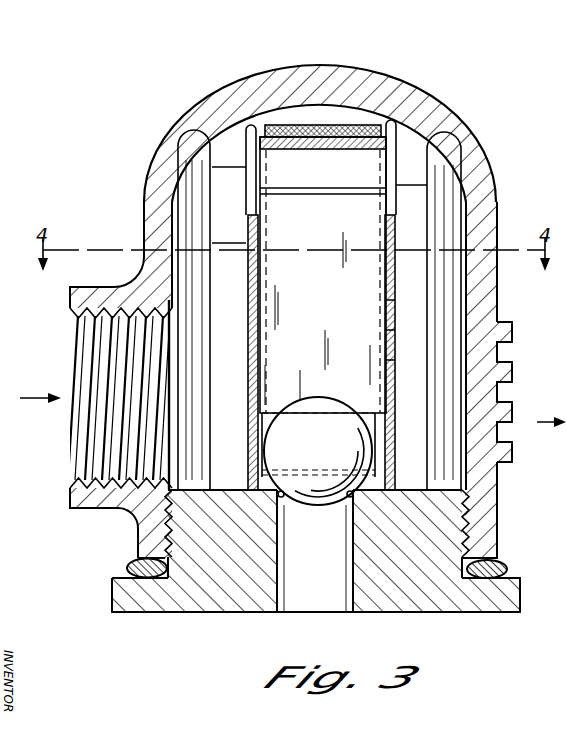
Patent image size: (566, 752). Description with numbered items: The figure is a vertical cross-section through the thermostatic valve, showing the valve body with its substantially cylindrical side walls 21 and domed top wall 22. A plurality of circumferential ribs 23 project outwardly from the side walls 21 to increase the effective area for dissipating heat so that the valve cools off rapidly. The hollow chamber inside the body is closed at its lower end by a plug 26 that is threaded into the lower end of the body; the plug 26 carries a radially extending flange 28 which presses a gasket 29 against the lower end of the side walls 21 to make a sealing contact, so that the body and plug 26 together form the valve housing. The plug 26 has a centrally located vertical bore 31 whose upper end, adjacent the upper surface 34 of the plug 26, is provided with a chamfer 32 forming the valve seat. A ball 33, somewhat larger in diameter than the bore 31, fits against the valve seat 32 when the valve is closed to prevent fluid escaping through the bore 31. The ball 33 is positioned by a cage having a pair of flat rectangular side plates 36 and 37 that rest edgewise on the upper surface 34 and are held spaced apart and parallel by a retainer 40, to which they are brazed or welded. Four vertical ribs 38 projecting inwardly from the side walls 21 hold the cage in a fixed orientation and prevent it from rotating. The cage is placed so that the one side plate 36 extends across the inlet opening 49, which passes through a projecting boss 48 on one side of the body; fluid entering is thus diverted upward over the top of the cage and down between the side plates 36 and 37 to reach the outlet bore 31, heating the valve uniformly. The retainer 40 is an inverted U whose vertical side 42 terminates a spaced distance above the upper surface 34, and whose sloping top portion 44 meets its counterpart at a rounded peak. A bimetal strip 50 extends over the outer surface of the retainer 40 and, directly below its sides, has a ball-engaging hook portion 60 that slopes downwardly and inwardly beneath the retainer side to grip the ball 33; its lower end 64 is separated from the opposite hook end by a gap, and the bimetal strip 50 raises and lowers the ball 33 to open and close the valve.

The side walls 21 is at (485, 277).
The domed top wall 22 is at (391, 90).
The circumferential ribs 23 is at (512, 370).
The plug 26 is at (433, 613).
The radially extending flange 28 is at (522, 597).
The gasket 29 is at (503, 567).
The vertical bore 31 is at (282, 612).
The chamfer 32 is at (282, 494).
The ball 33 is at (285, 450).
The upper surface of plug 34 is at (193, 491).
The side plate 36 is at (257, 318).
The side plate 37 is at (383, 332).
The vertical ribs 38 is at (420, 443).
The retainer 40 is at (304, 150).
The retainer side 42 is at (330, 283).
The retainer top portion 44 is at (378, 163).
The projecting boss 48 is at (98, 286).
The inlet opening 49 is at (70, 333).
The bimetal strip 50 is at (316, 125).
The ball-engaging hook portion 60 is at (374, 416).
The lower end of hook portion 64 is at (370, 493).